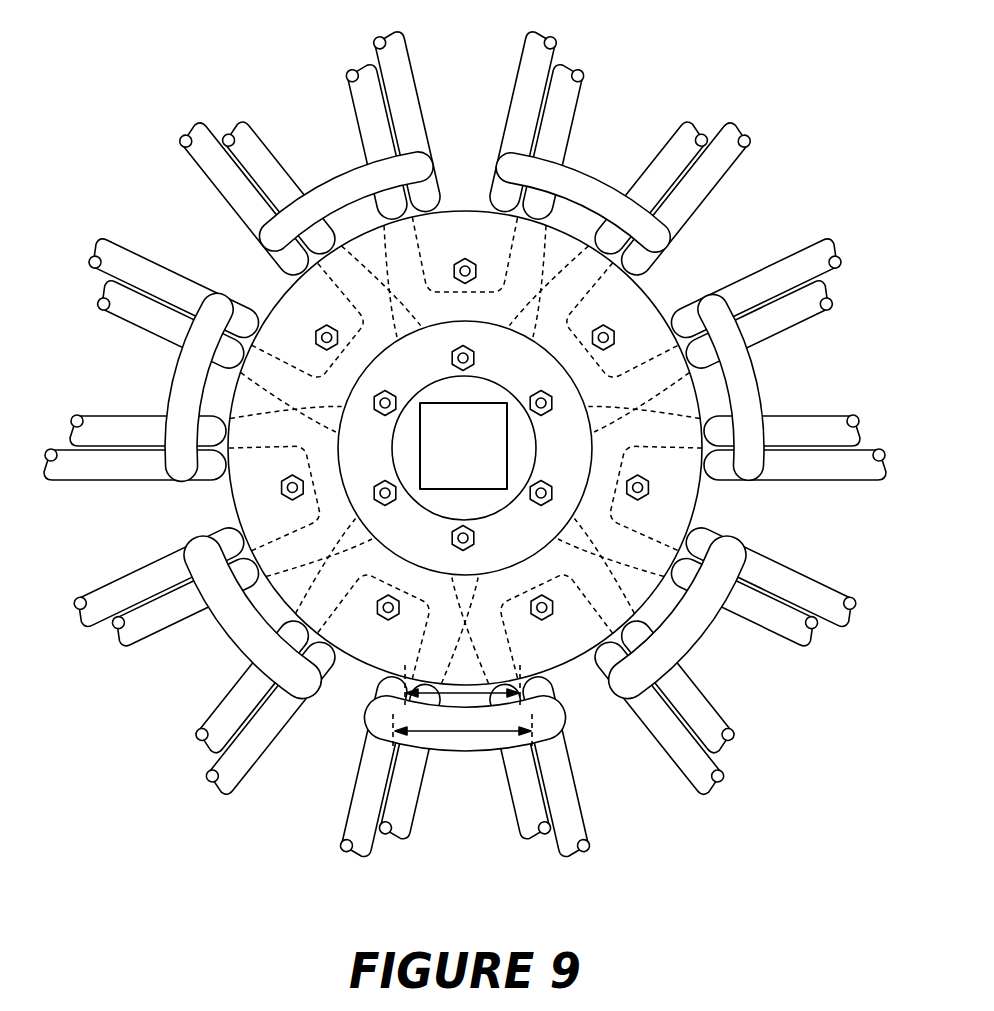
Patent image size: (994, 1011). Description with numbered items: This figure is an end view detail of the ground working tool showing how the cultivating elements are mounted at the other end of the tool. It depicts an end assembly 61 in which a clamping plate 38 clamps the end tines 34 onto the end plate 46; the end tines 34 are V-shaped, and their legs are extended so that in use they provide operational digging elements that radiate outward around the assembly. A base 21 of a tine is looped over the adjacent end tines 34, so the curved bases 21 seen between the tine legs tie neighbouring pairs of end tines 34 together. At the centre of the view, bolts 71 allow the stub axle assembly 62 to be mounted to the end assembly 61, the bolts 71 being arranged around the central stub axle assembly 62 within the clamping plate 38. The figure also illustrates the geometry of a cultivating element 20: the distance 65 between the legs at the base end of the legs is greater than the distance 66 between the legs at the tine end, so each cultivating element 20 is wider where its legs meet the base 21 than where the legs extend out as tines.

The cultivating element 20 is at (378, 752).
The base 21 is at (330, 190).
The end tines 34 is at (372, 110).
The clamping plate 38 is at (410, 370).
The end plate 46 is at (627, 310).
The end assembly 61 is at (746, 663).
The stub axle assembly 62 is at (437, 433).
The distance between the legs at the base end 65 is at (440, 733).
The distance between the legs at the tine end 66 is at (475, 695).
The bolts 71 is at (640, 493).